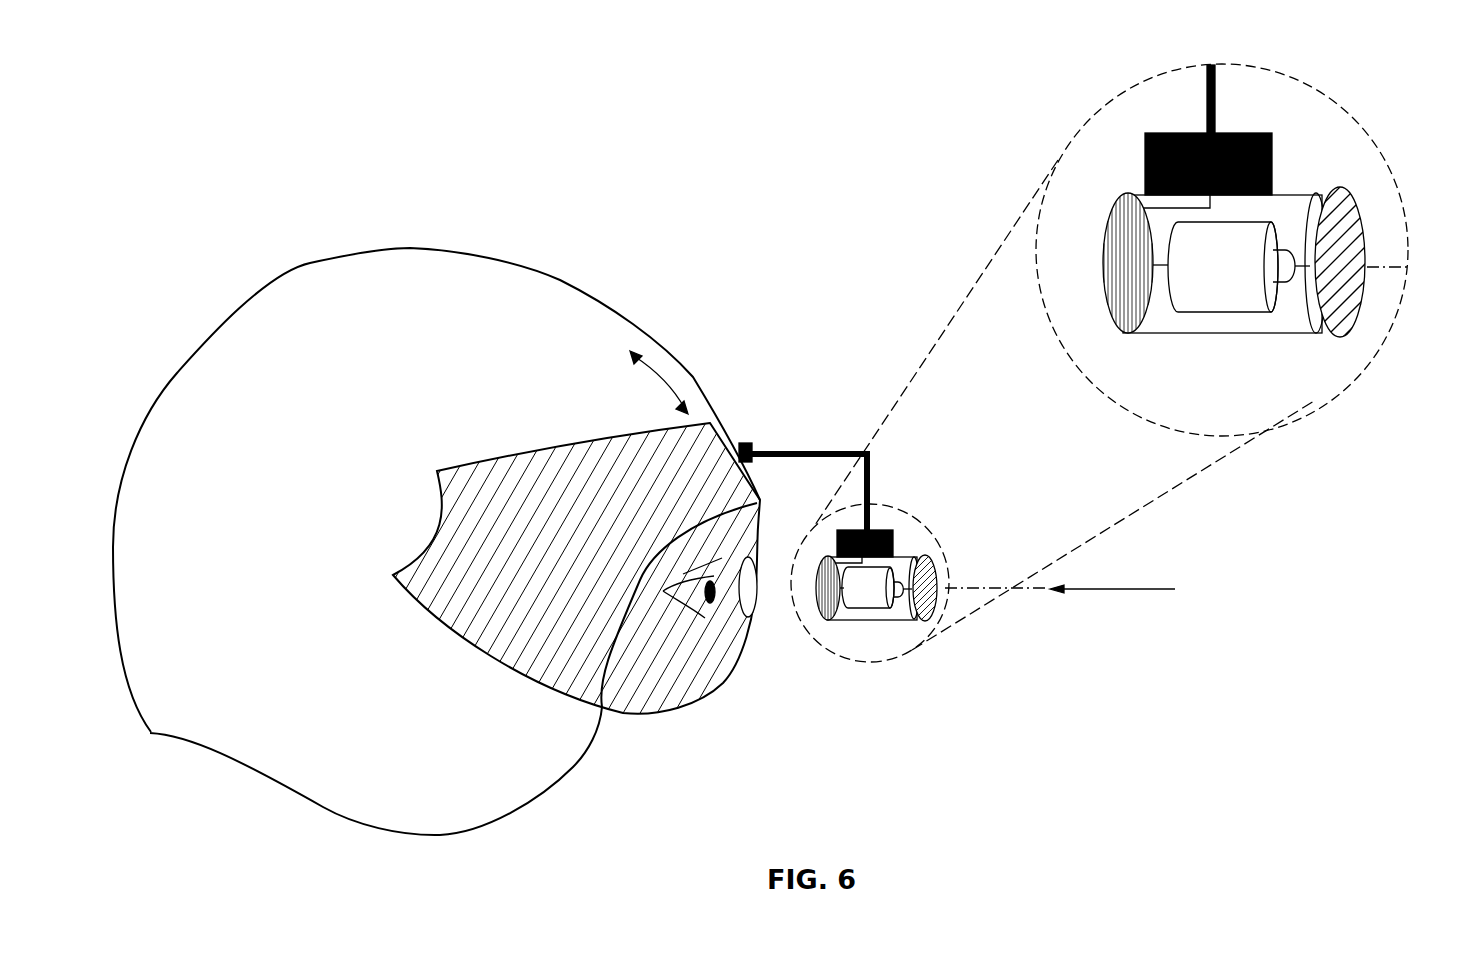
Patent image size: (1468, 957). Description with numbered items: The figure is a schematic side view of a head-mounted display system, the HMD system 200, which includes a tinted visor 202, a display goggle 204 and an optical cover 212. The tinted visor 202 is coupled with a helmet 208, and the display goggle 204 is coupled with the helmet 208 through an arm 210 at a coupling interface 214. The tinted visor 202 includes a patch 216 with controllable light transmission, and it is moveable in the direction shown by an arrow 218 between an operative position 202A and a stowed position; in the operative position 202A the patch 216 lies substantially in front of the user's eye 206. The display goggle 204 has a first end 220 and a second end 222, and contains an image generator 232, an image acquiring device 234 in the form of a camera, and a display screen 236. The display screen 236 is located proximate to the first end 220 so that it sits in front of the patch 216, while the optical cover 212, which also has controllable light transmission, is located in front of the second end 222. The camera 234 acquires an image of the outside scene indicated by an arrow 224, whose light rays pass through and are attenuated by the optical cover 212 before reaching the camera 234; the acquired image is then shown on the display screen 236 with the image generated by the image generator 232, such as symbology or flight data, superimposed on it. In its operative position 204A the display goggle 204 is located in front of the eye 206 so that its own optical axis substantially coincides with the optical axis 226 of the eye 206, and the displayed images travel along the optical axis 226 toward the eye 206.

The HMD system 200 is at (789, 311).
The tinted visor 202 is at (415, 596).
The operative position 202A is at (473, 640).
The display goggle 204 is at (884, 613).
The operative position 204A is at (890, 621).
The user's eye 206 is at (682, 612).
The helmet 208 is at (573, 767).
The arm 210 is at (810, 451).
The optical cover 212 is at (1366, 229).
The coupling interface 214 is at (743, 443).
The patch 216 is at (758, 573).
The arrow 218 is at (660, 377).
The first end 220 is at (1125, 334).
The second end 222 is at (1313, 334).
The arrow 224 is at (1152, 590).
The optical axis 226 is at (1030, 590).
The image generator 232 is at (1240, 133).
The image acquiring device 234 is at (1208, 313).
The display screen 236 is at (1105, 238).